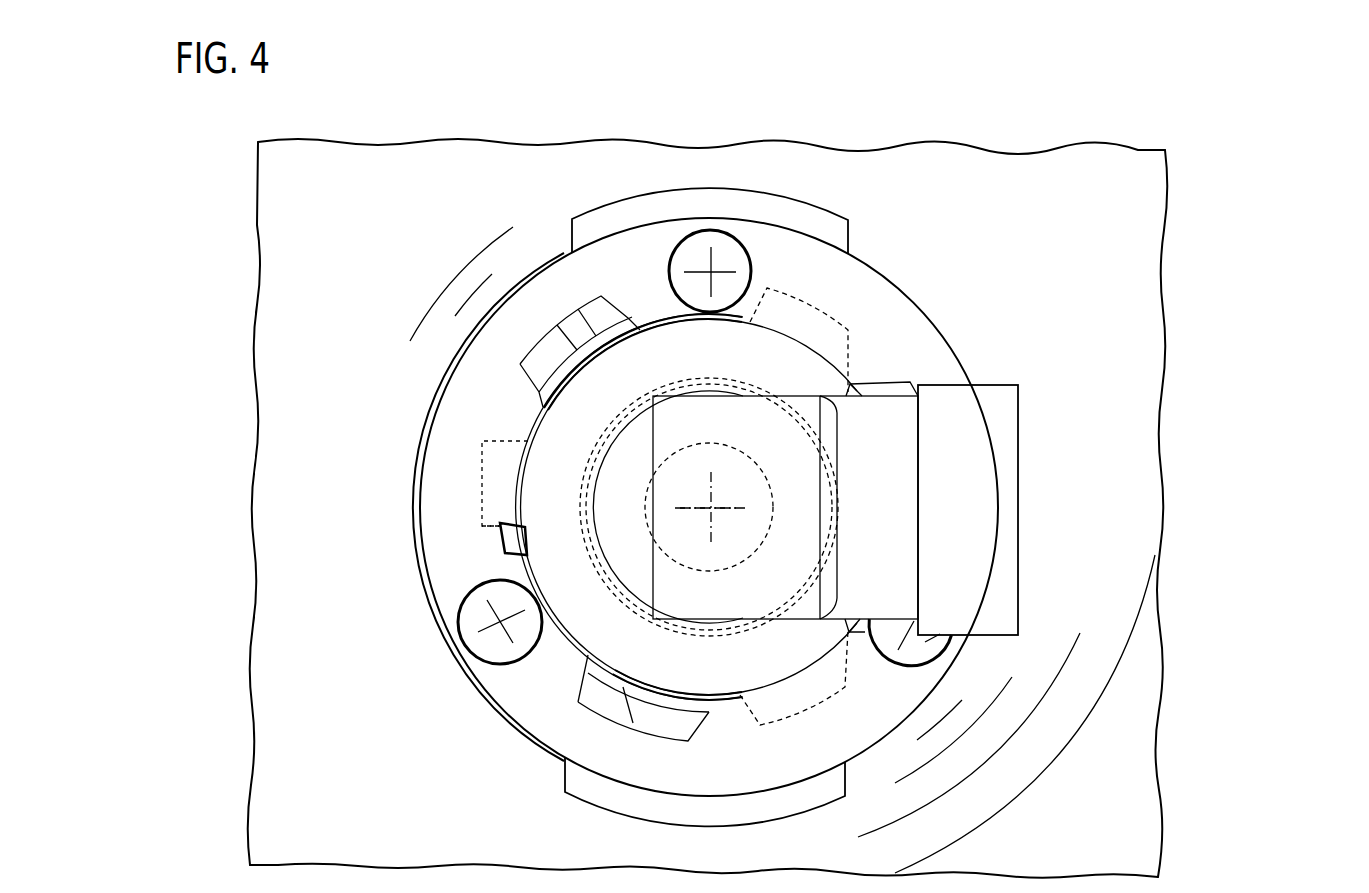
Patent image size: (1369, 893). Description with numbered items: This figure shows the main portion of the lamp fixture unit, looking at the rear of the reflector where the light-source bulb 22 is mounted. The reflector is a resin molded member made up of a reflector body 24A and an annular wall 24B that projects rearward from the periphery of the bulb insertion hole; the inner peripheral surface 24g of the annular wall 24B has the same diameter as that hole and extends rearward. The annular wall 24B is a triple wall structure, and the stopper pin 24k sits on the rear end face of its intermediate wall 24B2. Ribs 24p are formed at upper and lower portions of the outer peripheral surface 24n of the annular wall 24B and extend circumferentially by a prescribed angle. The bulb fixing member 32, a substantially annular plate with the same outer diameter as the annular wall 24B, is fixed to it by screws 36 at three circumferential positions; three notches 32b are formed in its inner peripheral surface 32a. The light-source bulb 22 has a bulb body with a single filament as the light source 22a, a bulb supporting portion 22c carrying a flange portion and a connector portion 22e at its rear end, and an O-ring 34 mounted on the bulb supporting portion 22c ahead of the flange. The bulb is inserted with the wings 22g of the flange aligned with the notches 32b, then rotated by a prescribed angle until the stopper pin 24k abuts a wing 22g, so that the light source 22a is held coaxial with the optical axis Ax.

The reflector body 24A is at (1168, 347).
The outer peripheral surface 24n is at (437, 397).
The bulb fixing member 32 is at (897, 285).
The ribs 24p is at (633, 213).
The screws 36 is at (730, 258).
The notches 32b is at (610, 349).
The inner peripheral surface 32a is at (797, 673).
The annular wall 24B is at (950, 342).
The intermediate wall 24B2 is at (633, 683).
The light-source bulb 22 is at (555, 392).
The light source 22a is at (760, 470).
The connector portion 22e is at (960, 452).
The O-ring 34 is at (593, 438).
The inner peripheral surface 24g is at (677, 407).
The optical axis Ax is at (712, 508).
The bulb supporting portion 22c is at (593, 467).
The wings 22g is at (473, 492).
The stopper pin 24k is at (515, 542).